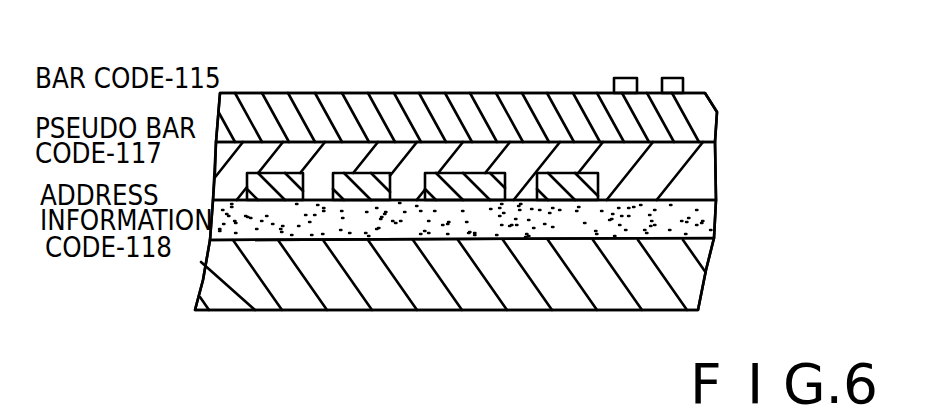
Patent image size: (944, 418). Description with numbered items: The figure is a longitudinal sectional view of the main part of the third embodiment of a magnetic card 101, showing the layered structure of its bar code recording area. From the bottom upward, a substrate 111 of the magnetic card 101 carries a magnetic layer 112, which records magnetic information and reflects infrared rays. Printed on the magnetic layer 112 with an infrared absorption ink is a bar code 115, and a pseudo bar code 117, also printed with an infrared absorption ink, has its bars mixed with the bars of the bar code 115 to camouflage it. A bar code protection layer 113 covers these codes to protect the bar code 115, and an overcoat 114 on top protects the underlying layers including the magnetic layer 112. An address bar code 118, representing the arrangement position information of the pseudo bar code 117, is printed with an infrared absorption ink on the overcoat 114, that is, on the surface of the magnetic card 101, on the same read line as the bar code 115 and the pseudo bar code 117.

The magnetic card 101 is at (324, 73).
The substrate 111 is at (665, 279).
The magnetic layer 112 is at (675, 222).
The bar code protection layer 113 is at (660, 166).
The overcoat 114 is at (690, 116).
The bar code 115 is at (268, 185).
The pseudo bar code 117 is at (372, 185).
The address bar code 118 is at (676, 78).